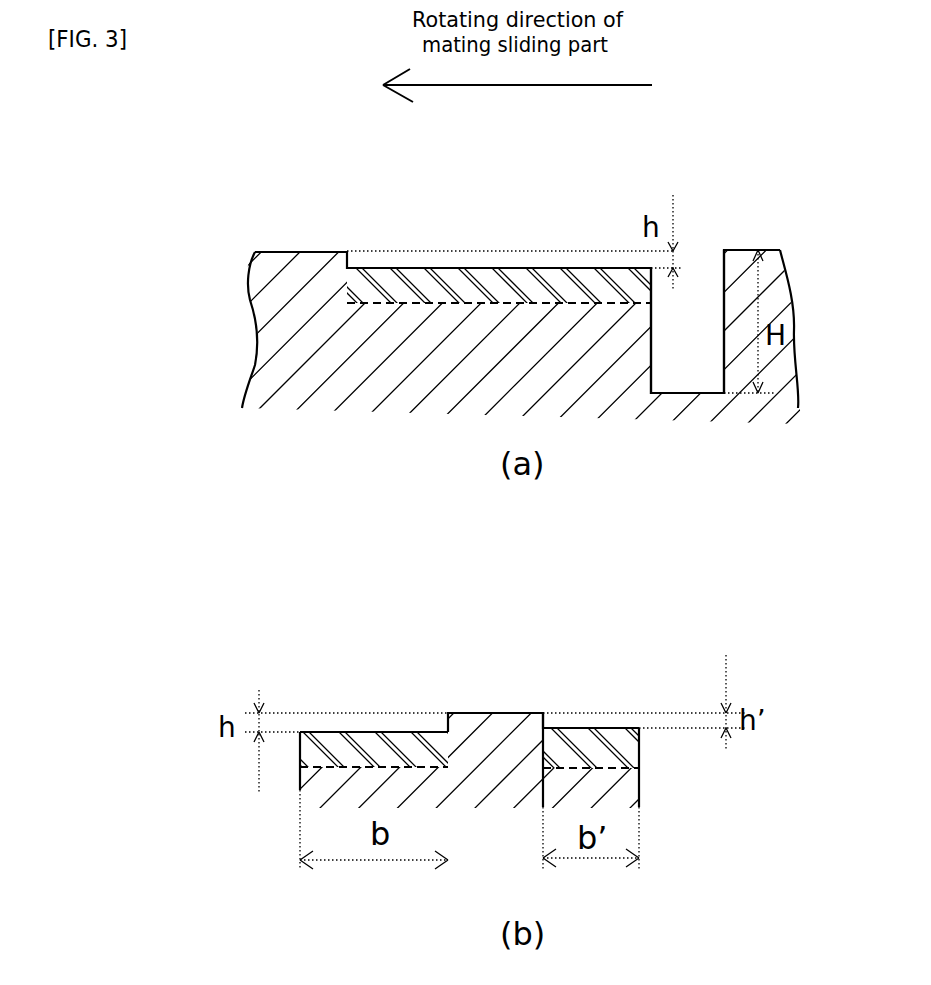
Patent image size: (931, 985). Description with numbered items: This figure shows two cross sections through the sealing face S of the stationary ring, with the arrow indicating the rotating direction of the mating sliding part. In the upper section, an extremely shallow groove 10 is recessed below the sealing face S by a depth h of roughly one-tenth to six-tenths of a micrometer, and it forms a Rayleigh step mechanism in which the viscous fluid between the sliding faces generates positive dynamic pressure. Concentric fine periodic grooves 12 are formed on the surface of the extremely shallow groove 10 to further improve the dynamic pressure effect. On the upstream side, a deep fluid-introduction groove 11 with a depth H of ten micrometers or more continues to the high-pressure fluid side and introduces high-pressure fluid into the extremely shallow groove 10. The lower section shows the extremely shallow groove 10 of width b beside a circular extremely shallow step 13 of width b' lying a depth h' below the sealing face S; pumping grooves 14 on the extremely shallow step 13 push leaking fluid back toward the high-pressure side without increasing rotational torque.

The extremely shallow groove 10 is at (481, 262).
The deep fluid-introduction groove 11 is at (682, 313).
The fine periodic groove 12 is at (421, 266).
The extremely shallow step 13 is at (598, 738).
The pumping groove 14 is at (652, 742).
The sealing face S is at (282, 251).